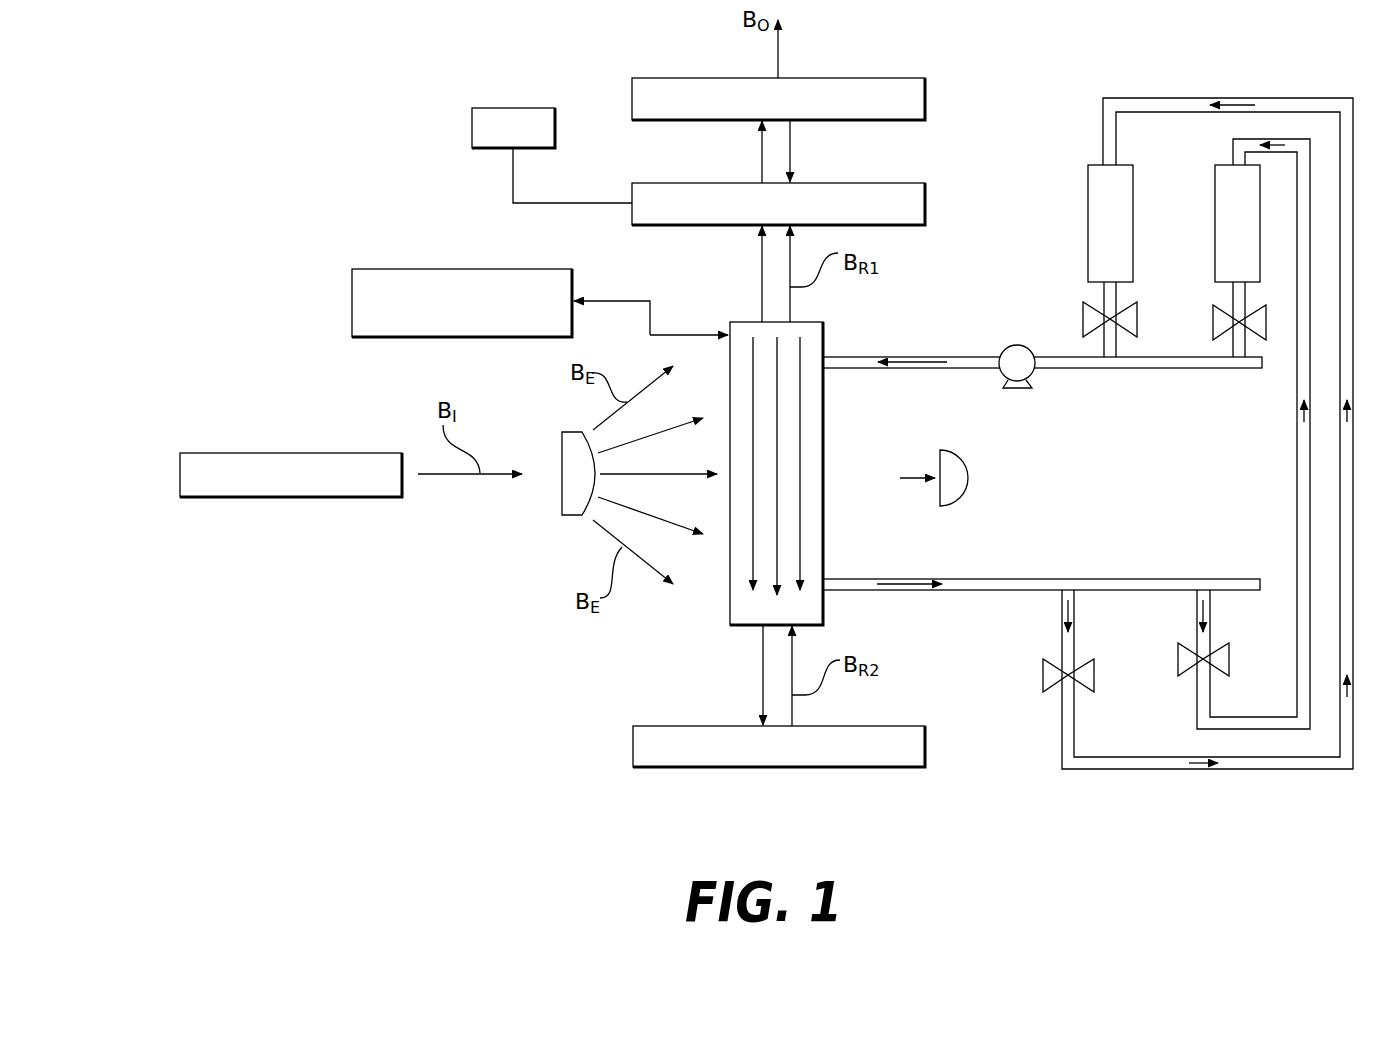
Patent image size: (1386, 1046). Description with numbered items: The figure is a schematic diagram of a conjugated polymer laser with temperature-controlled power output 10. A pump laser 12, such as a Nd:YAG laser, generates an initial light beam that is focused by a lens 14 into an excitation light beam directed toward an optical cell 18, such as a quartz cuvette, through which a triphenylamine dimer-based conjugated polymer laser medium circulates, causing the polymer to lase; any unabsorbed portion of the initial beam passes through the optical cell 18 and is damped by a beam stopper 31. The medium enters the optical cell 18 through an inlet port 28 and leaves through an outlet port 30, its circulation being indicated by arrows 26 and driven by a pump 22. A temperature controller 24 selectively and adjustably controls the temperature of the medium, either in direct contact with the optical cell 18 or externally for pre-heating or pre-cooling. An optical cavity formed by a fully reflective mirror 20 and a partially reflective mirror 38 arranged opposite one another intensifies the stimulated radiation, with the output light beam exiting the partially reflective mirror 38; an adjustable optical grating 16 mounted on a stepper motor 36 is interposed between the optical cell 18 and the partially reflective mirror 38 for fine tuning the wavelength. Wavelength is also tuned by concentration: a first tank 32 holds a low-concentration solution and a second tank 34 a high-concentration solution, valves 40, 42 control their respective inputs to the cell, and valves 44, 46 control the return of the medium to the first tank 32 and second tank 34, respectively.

The conjugated polymer laser with temperature-controlled power output 10 is at (208, 150).
The pump laser 12 is at (180, 472).
The lens 14 is at (558, 503).
The adjustable optical grating 16 is at (925, 205).
The optical cell 18 is at (823, 423).
The fully reflective mirror 20 is at (926, 745).
The pump 22 is at (1008, 344).
The temperature controller 24 is at (352, 300).
The arrows 26 is at (810, 500).
The inlet port 28 is at (846, 330).
The outlet port 30 is at (863, 558).
The beam stopper 31 is at (967, 478).
The first tank 32 is at (1088, 200).
The second tank 34 is at (1215, 202).
The stepper motor 36 is at (472, 128).
The partially reflective mirror 38 is at (925, 97).
The valve 40 is at (1137, 318).
The valve 42 is at (1213, 320).
The valve 44 is at (1095, 675).
The valve 46 is at (1230, 658).